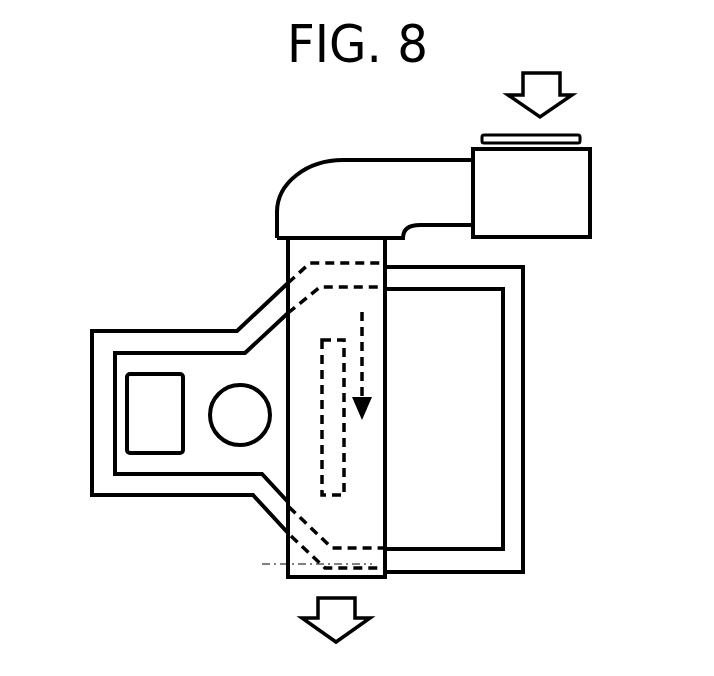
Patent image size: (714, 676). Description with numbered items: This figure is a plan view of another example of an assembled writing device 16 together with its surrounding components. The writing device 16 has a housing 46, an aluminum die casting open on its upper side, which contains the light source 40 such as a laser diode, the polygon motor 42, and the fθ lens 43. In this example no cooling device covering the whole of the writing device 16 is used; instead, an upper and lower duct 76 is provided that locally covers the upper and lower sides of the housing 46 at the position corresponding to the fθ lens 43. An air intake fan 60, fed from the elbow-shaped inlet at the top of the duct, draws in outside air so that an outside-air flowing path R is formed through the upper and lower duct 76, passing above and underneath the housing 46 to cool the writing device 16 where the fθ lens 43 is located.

The writing device 16 is at (531, 361).
The light source 40 is at (162, 382).
The polygon motor 42 is at (240, 395).
The fθ lens 43 is at (334, 342).
The housing 46 is at (97, 407).
The air intake fan 60 is at (577, 187).
The upper and lower duct 76 is at (283, 556).
The outside-air flowing path R is at (365, 352).